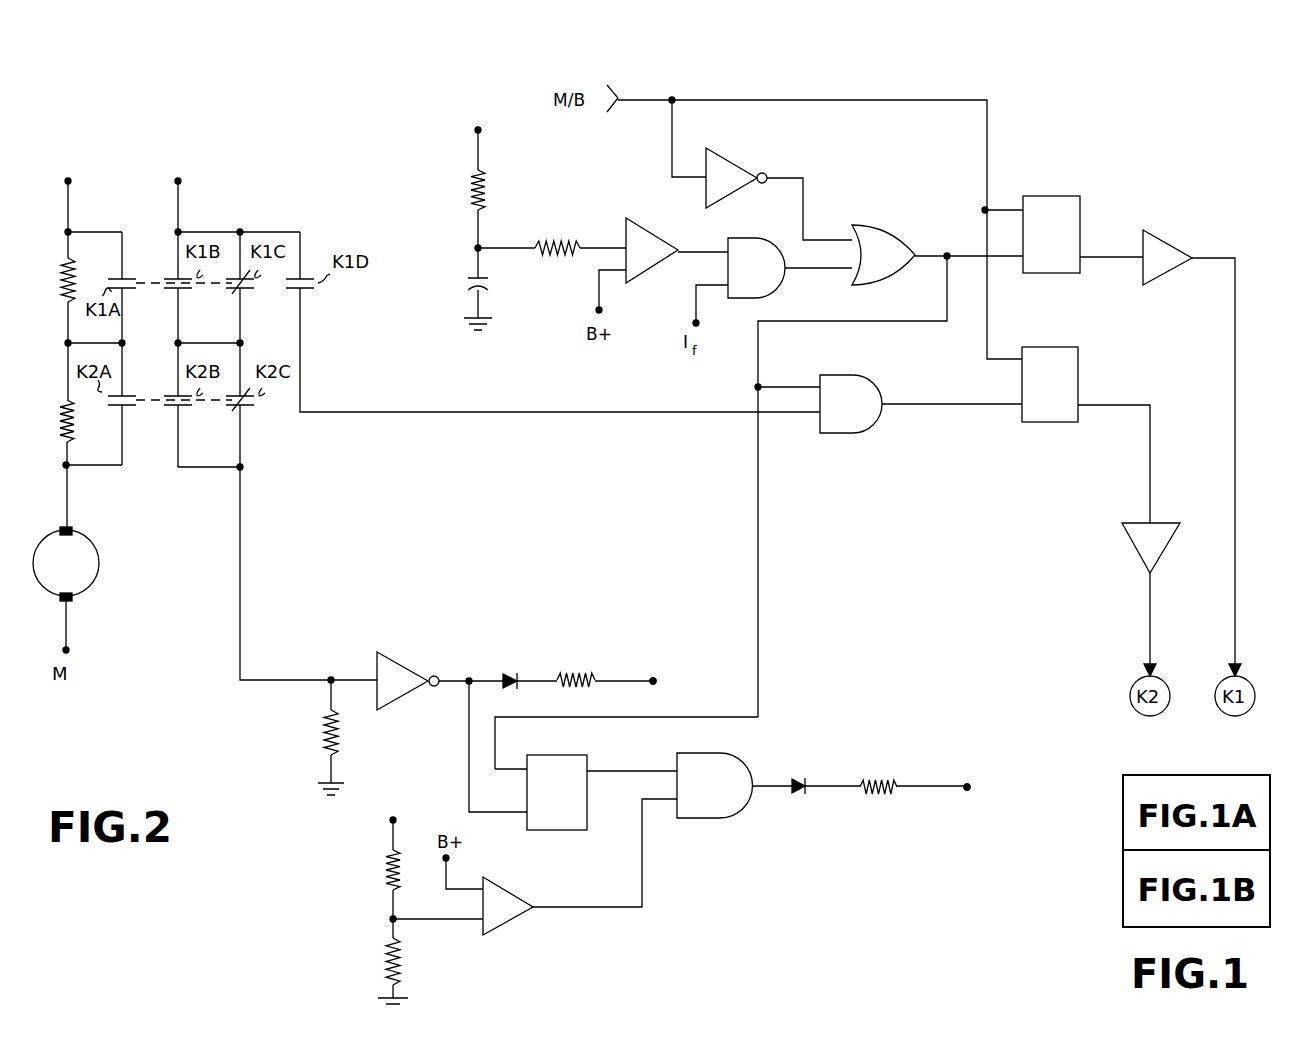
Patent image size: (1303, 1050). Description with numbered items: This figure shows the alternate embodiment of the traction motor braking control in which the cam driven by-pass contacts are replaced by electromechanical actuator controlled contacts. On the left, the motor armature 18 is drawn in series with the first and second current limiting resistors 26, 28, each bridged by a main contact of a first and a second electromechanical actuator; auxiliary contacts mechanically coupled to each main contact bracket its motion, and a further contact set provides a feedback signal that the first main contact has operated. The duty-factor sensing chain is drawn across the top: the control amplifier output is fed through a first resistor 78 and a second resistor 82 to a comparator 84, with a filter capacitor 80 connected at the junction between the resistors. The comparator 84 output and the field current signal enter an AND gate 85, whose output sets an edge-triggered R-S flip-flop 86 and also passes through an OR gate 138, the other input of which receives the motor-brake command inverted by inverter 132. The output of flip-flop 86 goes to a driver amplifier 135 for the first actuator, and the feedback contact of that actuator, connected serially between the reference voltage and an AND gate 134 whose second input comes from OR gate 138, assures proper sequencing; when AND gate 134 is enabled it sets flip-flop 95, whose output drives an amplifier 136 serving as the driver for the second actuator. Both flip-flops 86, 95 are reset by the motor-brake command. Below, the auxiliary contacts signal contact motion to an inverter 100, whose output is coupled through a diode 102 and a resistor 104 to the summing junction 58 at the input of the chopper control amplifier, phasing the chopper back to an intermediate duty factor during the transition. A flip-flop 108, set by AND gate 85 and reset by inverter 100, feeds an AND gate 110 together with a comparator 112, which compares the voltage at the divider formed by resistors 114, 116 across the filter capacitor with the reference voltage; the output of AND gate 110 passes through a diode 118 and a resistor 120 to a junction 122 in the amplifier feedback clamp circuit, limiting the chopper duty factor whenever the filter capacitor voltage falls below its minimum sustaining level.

The armature 18 is at (33, 542).
The first current limiting resistor 26 is at (59, 278).
The second current limiting resistor 28 is at (51, 417).
The summing junction 58 is at (655, 681).
The first resistor 78 is at (469, 193).
The filter capacitor 80 is at (463, 289).
The second resistor 82 is at (563, 237).
The comparator 84 is at (641, 221).
The AND gate 85 is at (760, 240).
The edge-triggered R-S flip-flop 86 is at (1063, 196).
The flip-flop 95 is at (1061, 352).
The inverter 100 is at (408, 661).
The diode 102 is at (504, 672).
The resistor 104 is at (576, 670).
The flip-flop 108 is at (573, 830).
The AND gate 110 is at (741, 766).
The comparator 112 is at (505, 925).
The resistor 114 is at (376, 968).
The resistor 116 is at (376, 876).
The diode 118 is at (807, 774).
The resistor 120 is at (887, 778).
The junction 122 is at (967, 784).
The inverter 132 is at (732, 162).
The AND gate 134 is at (878, 379).
The driver amplifier 135 is at (1175, 232).
The amplifier 136 is at (1134, 559).
The OR gate 138 is at (890, 232).